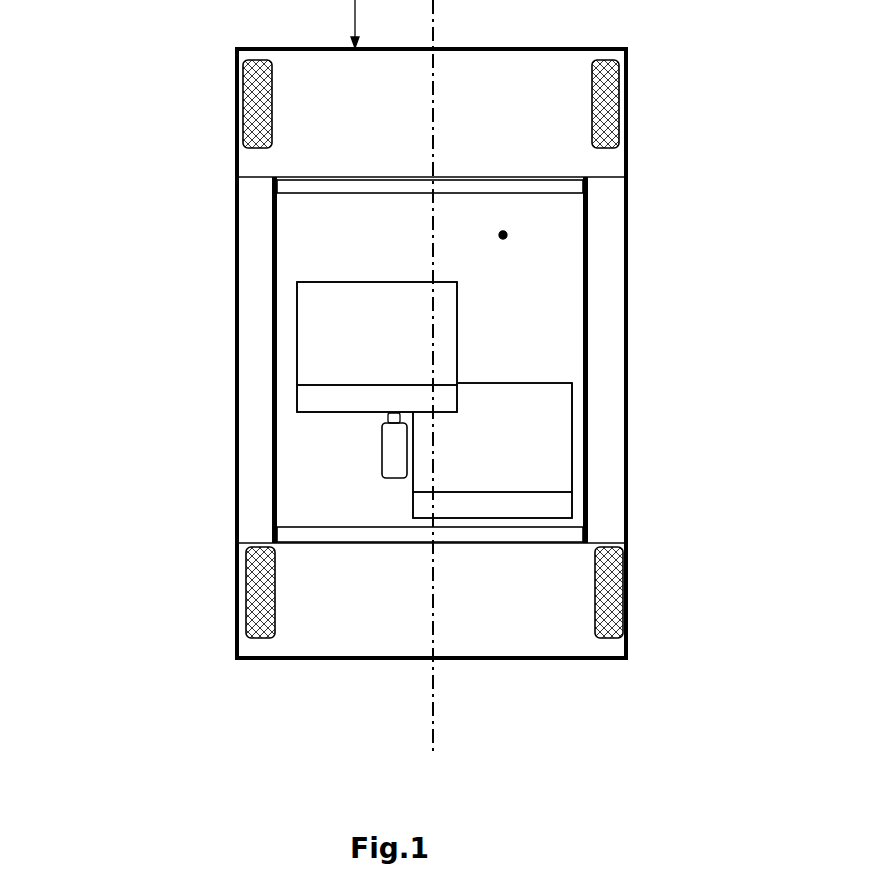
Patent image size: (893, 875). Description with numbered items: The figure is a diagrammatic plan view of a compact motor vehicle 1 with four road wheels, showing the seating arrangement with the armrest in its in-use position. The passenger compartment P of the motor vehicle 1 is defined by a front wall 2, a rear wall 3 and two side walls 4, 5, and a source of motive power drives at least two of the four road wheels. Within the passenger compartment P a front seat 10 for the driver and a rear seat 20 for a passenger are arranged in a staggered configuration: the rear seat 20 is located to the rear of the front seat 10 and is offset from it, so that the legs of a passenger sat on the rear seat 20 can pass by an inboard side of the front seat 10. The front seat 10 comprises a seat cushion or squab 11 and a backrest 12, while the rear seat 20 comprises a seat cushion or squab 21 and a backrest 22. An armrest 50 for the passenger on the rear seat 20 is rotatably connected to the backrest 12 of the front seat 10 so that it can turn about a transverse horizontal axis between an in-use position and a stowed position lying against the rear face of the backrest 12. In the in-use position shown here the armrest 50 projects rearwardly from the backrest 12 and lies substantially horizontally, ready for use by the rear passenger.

The motor vehicle 1 is at (233, 78).
The front wall 2 is at (278, 196).
The rear wall 3 is at (310, 527).
The side wall 4 is at (273, 243).
The side wall 5 is at (583, 290).
The front seat 10 is at (398, 347).
The seat cushion or squab 11 is at (298, 320).
The backrest 12 is at (298, 398).
The rear seat 20 is at (575, 452).
The seat cushion or squab 21 is at (573, 400).
The backrest 22 is at (568, 500).
The armrest 50 is at (382, 452).
The passenger compartment P is at (506, 234).